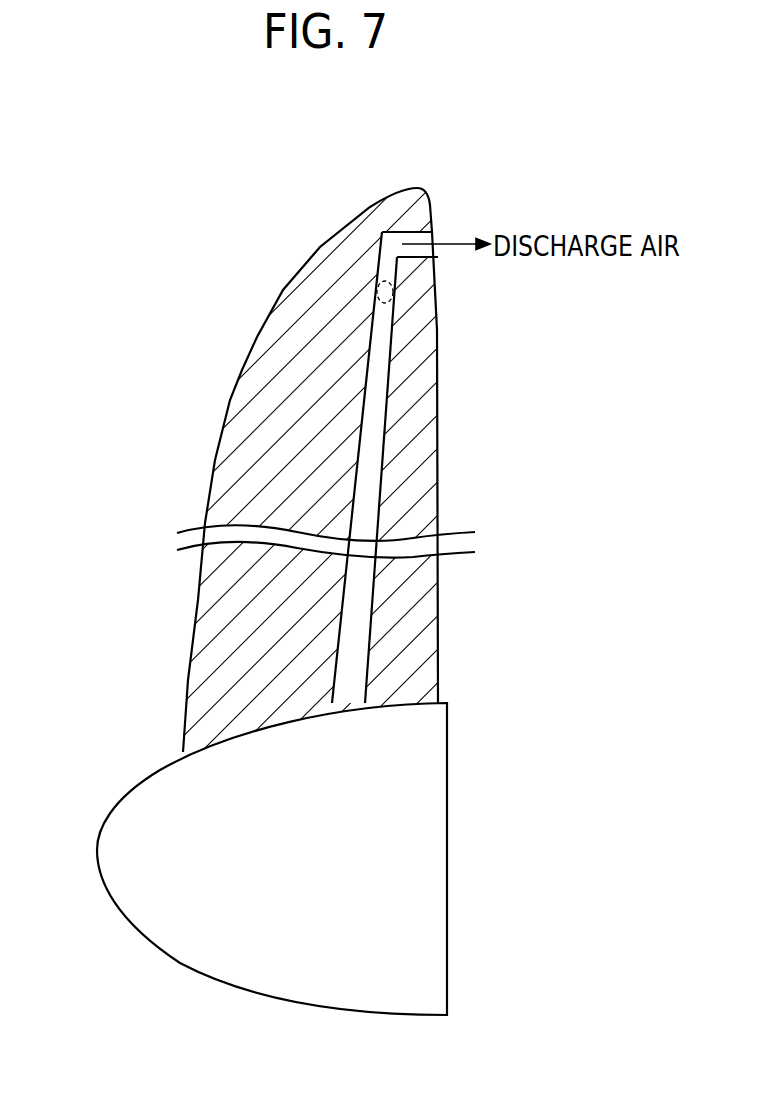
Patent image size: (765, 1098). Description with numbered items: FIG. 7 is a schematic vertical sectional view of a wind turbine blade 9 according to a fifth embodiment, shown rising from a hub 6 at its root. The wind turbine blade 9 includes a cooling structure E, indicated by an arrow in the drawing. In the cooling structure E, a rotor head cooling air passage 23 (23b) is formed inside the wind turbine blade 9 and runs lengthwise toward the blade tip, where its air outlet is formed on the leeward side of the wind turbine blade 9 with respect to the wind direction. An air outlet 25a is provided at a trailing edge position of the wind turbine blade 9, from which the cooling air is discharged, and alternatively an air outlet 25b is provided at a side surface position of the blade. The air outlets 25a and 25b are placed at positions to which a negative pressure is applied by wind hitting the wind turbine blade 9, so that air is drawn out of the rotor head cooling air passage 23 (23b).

The hub 6 is at (118, 808).
The wind turbine blade 9 is at (212, 455).
The rotor head cooling air passage 23 is at (456, 467).
The rotor head cooling air passage 23b is at (378, 422).
The air outlet 25a is at (427, 238).
The air outlet 25b is at (388, 294).
The cooling structure E is at (102, 260).